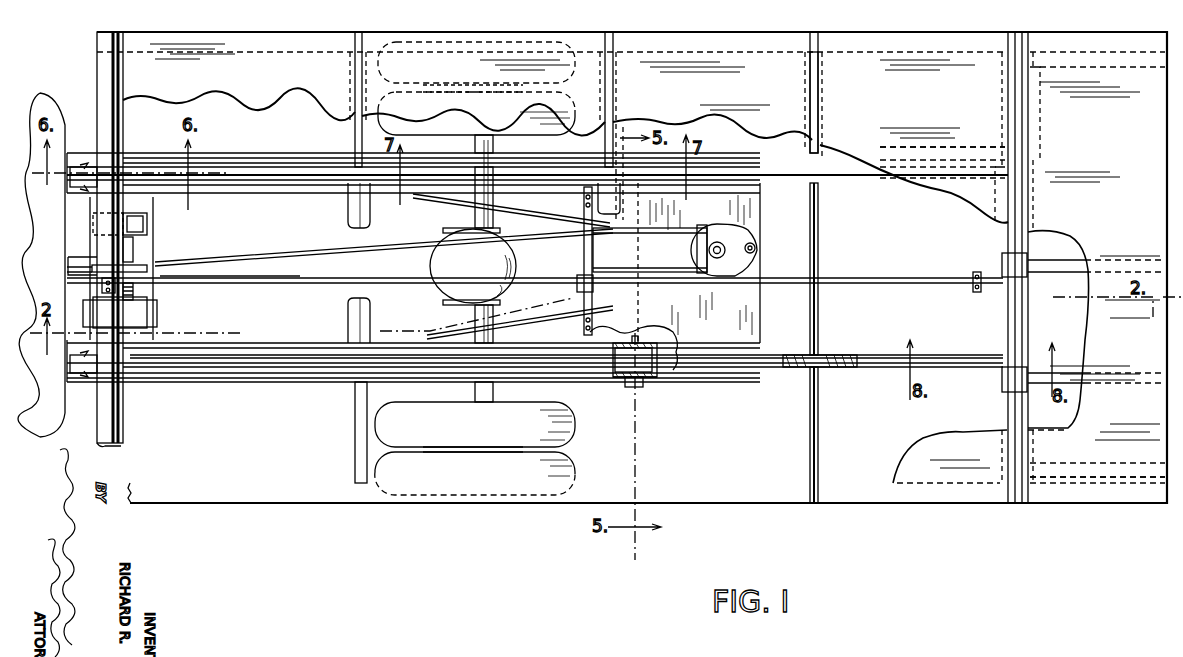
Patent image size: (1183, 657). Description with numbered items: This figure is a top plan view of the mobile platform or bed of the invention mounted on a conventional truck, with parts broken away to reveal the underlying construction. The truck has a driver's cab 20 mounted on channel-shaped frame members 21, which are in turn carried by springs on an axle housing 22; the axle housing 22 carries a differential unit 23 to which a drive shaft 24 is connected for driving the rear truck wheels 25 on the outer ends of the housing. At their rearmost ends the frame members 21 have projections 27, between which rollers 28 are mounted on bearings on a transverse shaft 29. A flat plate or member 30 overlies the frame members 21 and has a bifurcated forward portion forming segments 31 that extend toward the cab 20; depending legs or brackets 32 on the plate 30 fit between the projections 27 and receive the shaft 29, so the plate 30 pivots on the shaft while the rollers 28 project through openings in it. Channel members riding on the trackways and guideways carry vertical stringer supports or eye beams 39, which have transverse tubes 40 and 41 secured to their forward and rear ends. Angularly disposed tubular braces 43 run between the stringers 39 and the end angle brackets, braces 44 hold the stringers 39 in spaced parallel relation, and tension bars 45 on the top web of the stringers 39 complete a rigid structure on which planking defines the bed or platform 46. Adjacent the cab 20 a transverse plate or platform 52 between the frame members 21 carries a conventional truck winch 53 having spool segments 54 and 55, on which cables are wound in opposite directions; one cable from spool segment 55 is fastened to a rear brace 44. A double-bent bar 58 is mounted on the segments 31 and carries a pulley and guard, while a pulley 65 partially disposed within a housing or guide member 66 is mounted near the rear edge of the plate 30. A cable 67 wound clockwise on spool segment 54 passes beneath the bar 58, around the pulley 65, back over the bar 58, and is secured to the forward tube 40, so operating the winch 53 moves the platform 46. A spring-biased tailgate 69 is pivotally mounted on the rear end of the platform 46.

The driver's cab 20 is at (38, 99).
The frame members 21 is at (76, 150).
The axle housing 22 is at (462, 214).
The differential unit 23 is at (500, 256).
The drive shaft 24 is at (327, 252).
The rear truck wheels 25 is at (389, 480).
The projections 27 is at (620, 388).
The roller 28 is at (658, 358).
The shaft 29 is at (640, 336).
The plate or member 30 is at (752, 221).
The segments 31 is at (512, 204).
The depending legs or brackets 32 is at (655, 378).
The stringer supports or eye beams 39 is at (845, 370).
The tube 40 is at (108, 88).
The tube 41 is at (1015, 405).
The tubular braces 43 is at (810, 421).
The braces 44 is at (350, 208).
The tension bars 45 is at (356, 136).
The bed or platform 46 is at (967, 114).
The plate or platform 52 is at (147, 214).
The truck winch 53 is at (137, 223).
The spool segment 54 is at (134, 245).
The spool segment 55 is at (150, 298).
The bar 58 is at (583, 262).
The pulley 65 is at (700, 256).
The housing or guide member 66 is at (740, 260).
The cable 67 is at (207, 282).
The tailgate 69 is at (1088, 492).